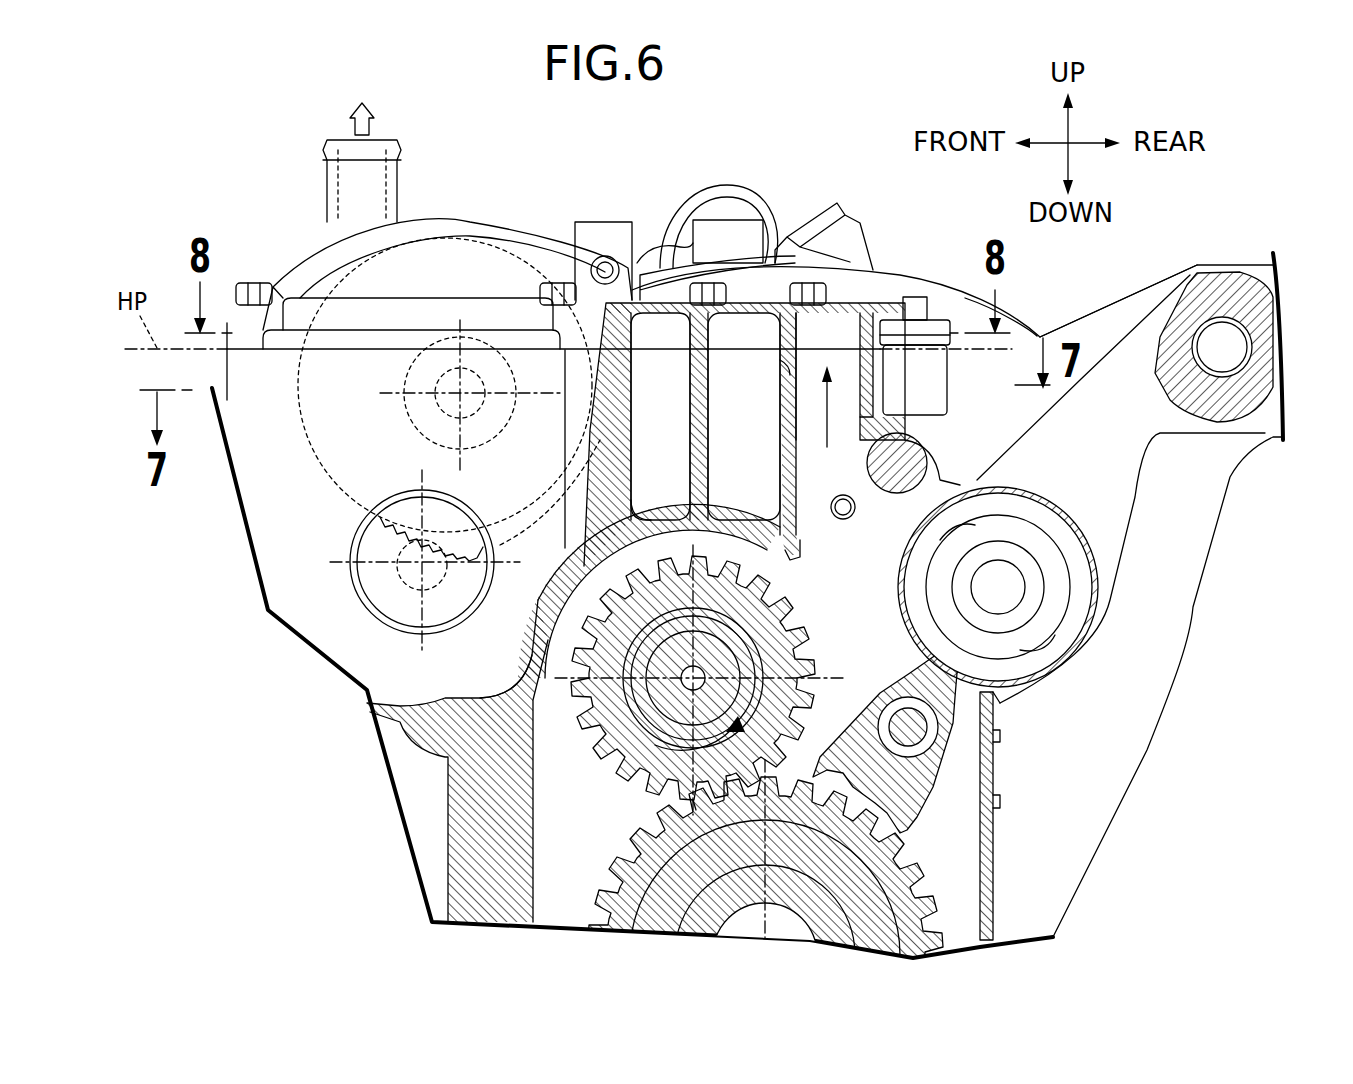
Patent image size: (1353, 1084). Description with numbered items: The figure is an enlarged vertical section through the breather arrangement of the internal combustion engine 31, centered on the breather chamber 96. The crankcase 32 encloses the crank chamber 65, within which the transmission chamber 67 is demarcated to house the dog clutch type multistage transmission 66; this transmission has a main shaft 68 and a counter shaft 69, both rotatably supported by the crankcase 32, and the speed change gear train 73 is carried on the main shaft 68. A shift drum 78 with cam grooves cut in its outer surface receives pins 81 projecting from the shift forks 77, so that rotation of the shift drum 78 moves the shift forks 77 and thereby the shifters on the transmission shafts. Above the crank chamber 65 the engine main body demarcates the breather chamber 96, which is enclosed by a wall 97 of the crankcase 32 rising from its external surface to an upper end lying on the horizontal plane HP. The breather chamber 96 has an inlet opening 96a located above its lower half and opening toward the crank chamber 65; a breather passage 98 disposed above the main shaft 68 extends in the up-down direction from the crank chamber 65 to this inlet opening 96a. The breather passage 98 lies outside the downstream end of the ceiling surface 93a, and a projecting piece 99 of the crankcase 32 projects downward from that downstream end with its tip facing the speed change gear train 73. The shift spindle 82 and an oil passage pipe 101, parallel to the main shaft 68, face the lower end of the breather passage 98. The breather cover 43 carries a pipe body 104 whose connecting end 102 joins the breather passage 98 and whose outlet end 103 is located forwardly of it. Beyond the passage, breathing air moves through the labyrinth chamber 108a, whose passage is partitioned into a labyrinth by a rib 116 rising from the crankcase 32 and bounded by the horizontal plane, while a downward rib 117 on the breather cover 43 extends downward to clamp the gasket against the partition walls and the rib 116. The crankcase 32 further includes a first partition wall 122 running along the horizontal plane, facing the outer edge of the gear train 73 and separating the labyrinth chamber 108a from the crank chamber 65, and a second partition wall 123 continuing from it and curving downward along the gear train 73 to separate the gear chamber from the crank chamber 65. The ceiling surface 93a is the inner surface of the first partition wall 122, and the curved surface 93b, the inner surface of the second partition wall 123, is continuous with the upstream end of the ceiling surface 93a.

The internal combustion engine 31 is at (1042, 326).
The crankcase 32 is at (993, 897).
The breather cover 43 is at (490, 228).
The crank chamber 65 is at (1029, 816).
The transmission chamber 67 is at (975, 822).
The dog clutch type multistage transmission 66 is at (601, 775).
The main shaft 68 is at (650, 700).
The counter shaft 69 is at (650, 908).
The speed change gear train 73 is at (800, 622).
The shift fork 77 is at (888, 700).
The shift drum 78 is at (1030, 505).
The pin 81 is at (948, 658).
The shift spindle 82 is at (915, 448).
The ceiling surface 93a is at (745, 527).
The curved surface 93b is at (548, 645).
The breather chamber 96 is at (727, 317).
The inlet opening 96a is at (868, 372).
The wall 97 is at (273, 527).
The breather passage 98 is at (782, 435).
The projecting piece 99 is at (793, 540).
The oil passage pipe 101 is at (853, 516).
The connecting end 102 is at (807, 360).
The outlet end 103 is at (382, 190).
The pipe body 104 is at (323, 170).
The labyrinth chamber 108a is at (777, 470).
The rib 116 is at (687, 400).
The downward rib 117 is at (705, 330).
The first partition wall 122 is at (680, 520).
The second partition wall 123 is at (540, 622).